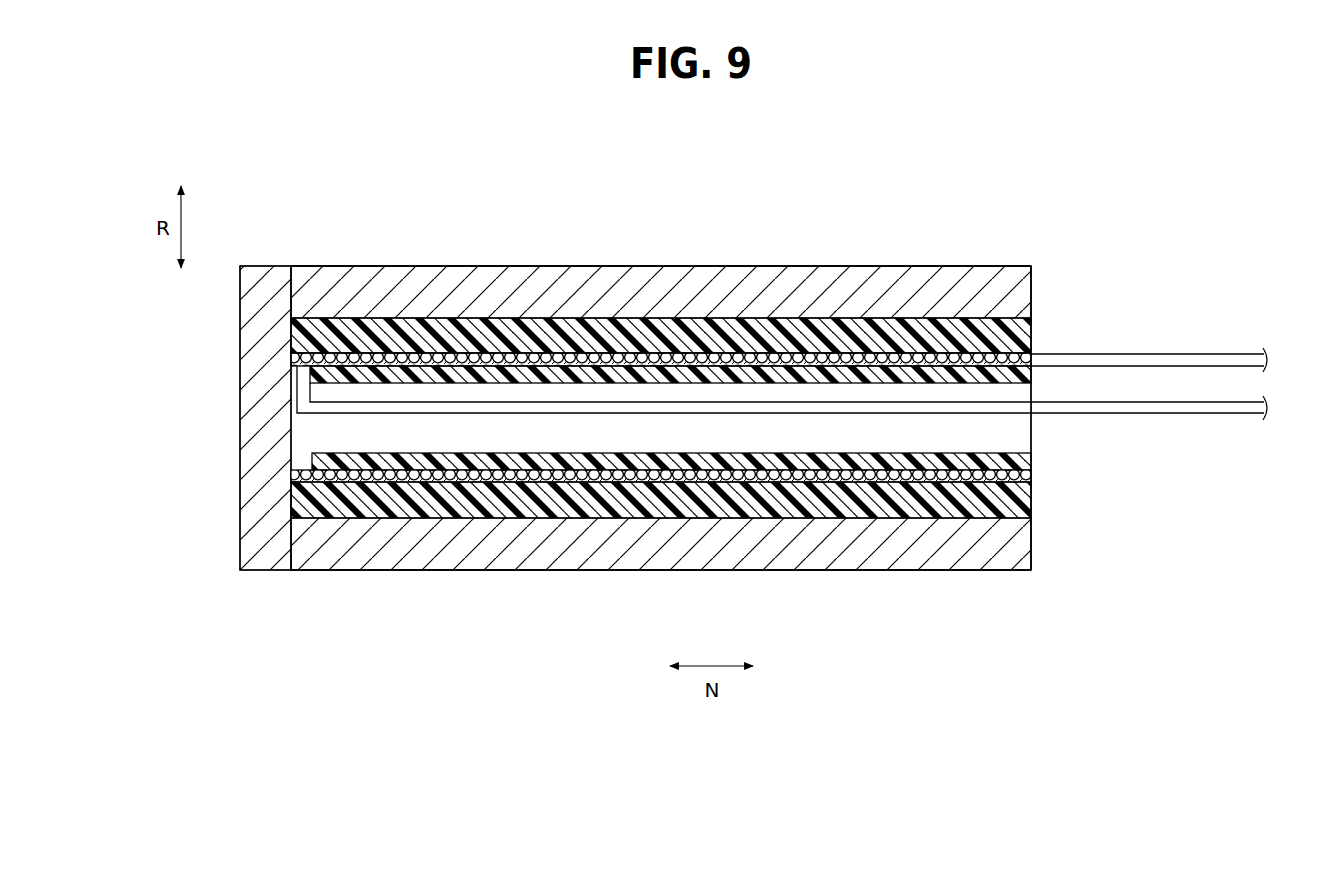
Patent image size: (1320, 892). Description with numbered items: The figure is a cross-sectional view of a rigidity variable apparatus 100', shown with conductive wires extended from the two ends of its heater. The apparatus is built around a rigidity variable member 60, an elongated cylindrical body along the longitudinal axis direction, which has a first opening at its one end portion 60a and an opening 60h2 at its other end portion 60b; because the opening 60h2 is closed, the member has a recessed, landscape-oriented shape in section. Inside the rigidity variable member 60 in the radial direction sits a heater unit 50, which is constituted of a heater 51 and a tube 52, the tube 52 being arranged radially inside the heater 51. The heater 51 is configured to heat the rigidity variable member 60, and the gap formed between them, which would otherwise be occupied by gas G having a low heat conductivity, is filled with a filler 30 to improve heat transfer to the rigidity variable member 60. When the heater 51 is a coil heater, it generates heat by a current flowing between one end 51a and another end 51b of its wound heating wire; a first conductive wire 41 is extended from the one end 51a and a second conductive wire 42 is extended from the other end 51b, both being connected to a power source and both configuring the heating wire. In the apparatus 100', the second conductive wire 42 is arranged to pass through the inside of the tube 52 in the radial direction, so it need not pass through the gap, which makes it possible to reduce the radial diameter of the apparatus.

The rigidity variable apparatus 100' is at (720, 358).
The rigidity variable member 60 is at (629, 418).
The one end portion 60a is at (1032, 280).
The other end portion 60b is at (291, 303).
The opening 60h2 is at (288, 422).
The filler 30 is at (1020, 332).
The heater unit 50 is at (1113, 432).
The heater 51 is at (707, 346).
The one end 51a is at (1028, 360).
The other end 51b is at (296, 353).
The tube 52 is at (1032, 371).
The first conductive wire 41 is at (1192, 355).
The second conductive wire 42 is at (1194, 414).
The gas G is at (583, 434).